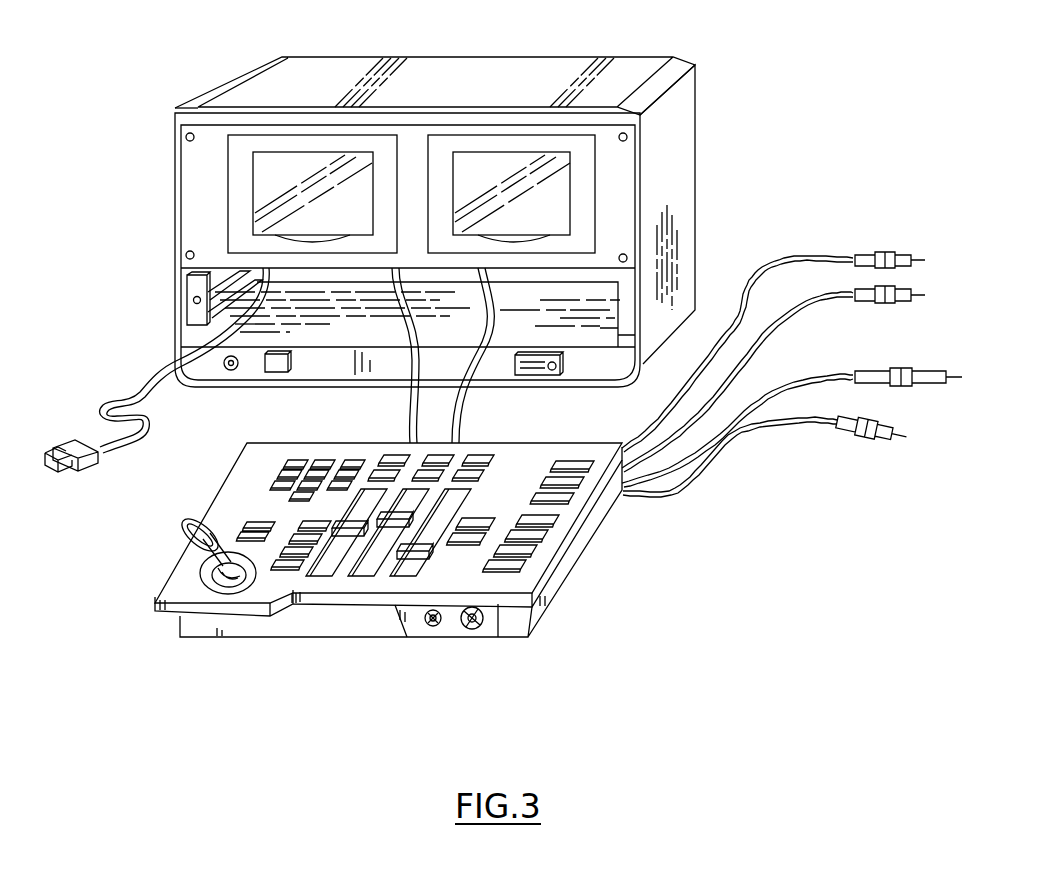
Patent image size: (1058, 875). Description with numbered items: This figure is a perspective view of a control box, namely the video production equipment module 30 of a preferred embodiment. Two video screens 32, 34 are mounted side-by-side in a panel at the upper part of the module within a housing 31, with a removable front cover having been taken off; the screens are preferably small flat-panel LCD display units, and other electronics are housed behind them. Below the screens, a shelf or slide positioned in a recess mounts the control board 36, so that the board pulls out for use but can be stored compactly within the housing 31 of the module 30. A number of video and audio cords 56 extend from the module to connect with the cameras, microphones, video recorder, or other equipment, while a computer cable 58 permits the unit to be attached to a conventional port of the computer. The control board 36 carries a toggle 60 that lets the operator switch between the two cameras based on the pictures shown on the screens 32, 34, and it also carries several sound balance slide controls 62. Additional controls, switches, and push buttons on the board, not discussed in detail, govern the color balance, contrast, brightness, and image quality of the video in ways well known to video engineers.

The video production equipment module 30 is at (785, 150).
The housing 31 is at (262, 88).
The video screen 32 is at (252, 203).
The video screen 34 is at (582, 196).
The control board 36 is at (401, 558).
The video and audio cords 56 is at (918, 376).
The computer cable 58 is at (101, 404).
The toggle 60 is at (207, 573).
The sound balance slide controls 62 is at (350, 537).